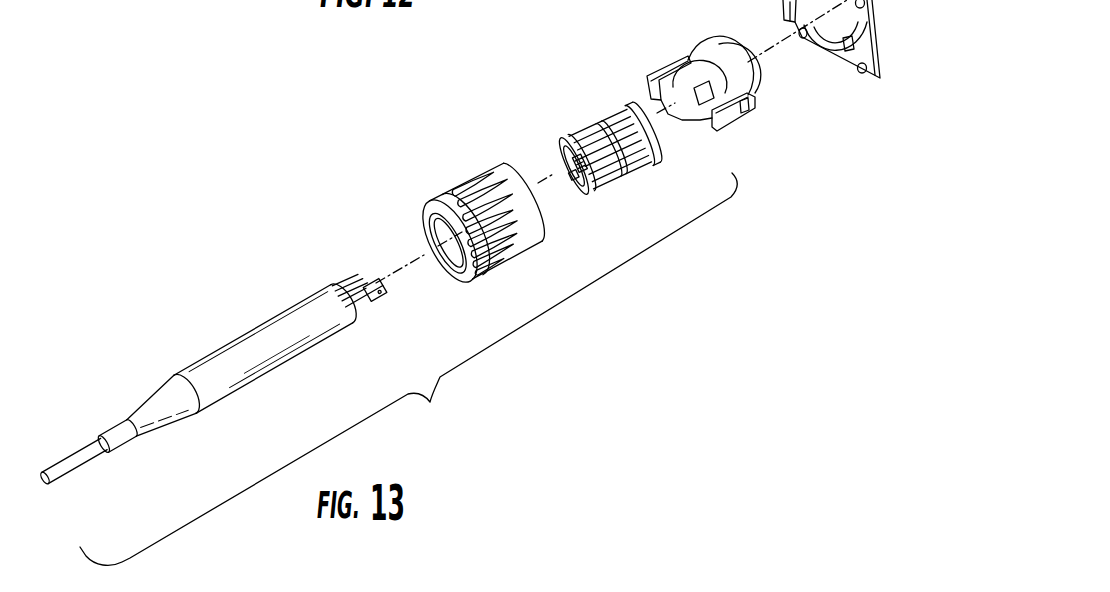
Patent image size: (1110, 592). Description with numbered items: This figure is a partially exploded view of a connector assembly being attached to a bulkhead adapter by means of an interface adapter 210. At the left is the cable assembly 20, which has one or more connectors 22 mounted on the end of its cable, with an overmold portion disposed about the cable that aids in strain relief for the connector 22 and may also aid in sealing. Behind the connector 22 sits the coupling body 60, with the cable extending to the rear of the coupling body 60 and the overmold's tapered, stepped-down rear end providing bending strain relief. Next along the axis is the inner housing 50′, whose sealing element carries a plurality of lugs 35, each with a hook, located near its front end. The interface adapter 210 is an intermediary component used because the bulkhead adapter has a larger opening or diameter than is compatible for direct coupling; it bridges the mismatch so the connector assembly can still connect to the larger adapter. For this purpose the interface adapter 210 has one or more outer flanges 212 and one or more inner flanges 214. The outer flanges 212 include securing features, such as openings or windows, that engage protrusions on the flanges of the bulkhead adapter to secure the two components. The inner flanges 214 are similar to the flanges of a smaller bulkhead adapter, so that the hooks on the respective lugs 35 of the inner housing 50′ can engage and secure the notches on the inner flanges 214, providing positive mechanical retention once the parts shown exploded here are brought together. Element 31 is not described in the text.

The cable assembly 20 is at (240, 338).
The connector 22 is at (370, 272).
The coupling body 60 is at (474, 182).
The inner housing 50′ is at (608, 155).
The lug 35 is at (619, 164).
The housing rear collar 31 is at (645, 132).
The interface adapter 210 is at (698, 99).
The outer flange 212 is at (665, 73).
The inner flange 214 is at (702, 107).